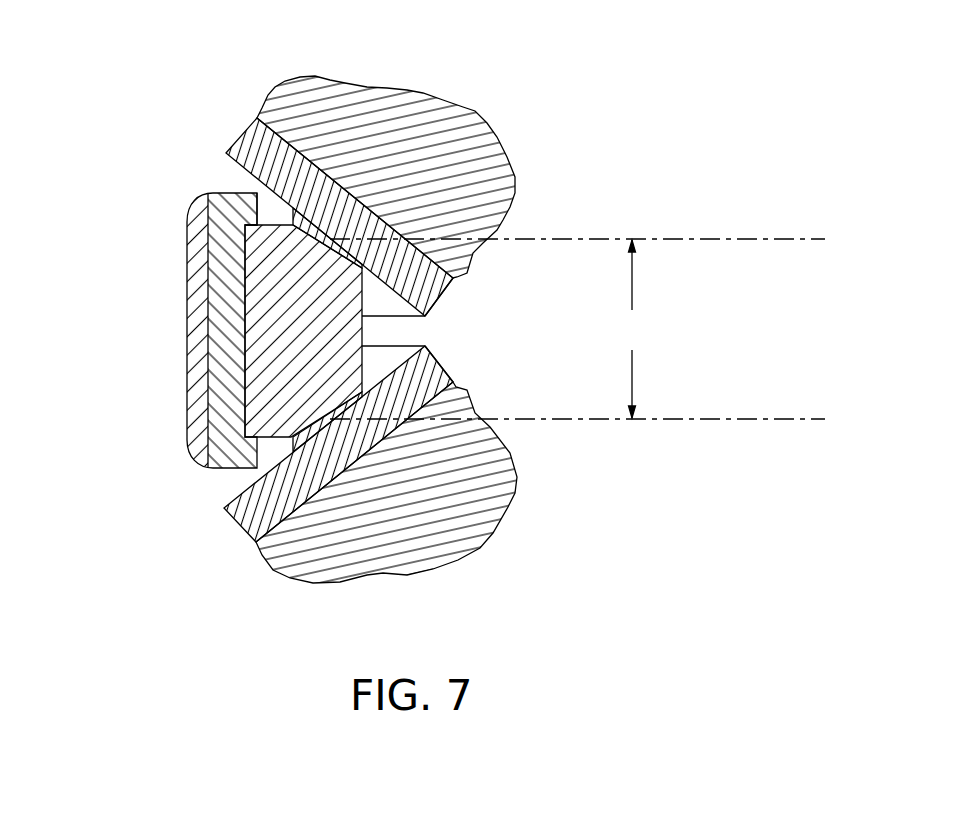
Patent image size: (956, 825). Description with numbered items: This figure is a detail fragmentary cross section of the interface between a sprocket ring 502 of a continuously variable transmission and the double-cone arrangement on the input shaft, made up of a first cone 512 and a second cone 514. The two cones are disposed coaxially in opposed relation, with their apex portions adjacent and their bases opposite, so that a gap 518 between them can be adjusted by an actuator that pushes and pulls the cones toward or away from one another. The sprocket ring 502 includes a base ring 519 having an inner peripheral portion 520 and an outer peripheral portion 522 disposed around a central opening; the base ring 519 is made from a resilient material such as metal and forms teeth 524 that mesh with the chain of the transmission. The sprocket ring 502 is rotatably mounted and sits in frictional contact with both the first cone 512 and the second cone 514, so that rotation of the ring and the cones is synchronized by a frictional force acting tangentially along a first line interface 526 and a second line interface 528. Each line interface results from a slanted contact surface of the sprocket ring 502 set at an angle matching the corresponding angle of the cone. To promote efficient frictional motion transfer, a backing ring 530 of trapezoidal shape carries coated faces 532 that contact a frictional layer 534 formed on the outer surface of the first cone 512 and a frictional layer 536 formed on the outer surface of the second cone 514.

The sprocket ring 502 is at (188, 152).
The first cone 512 is at (430, 112).
The second cone 514 is at (470, 520).
The gap 518 is at (577, 329).
The base ring 519 is at (222, 193).
The inner peripheral portion 520 is at (460, 342).
The outer peripheral portion 522 is at (163, 348).
The teeth 524 is at (203, 442).
The first line interface 526 is at (290, 210).
The second line interface 528 is at (324, 437).
The backing ring 530 is at (265, 302).
The coated faces 532 is at (342, 264).
The frictional layer 534 is at (438, 286).
The frictional layer 536 is at (445, 373).